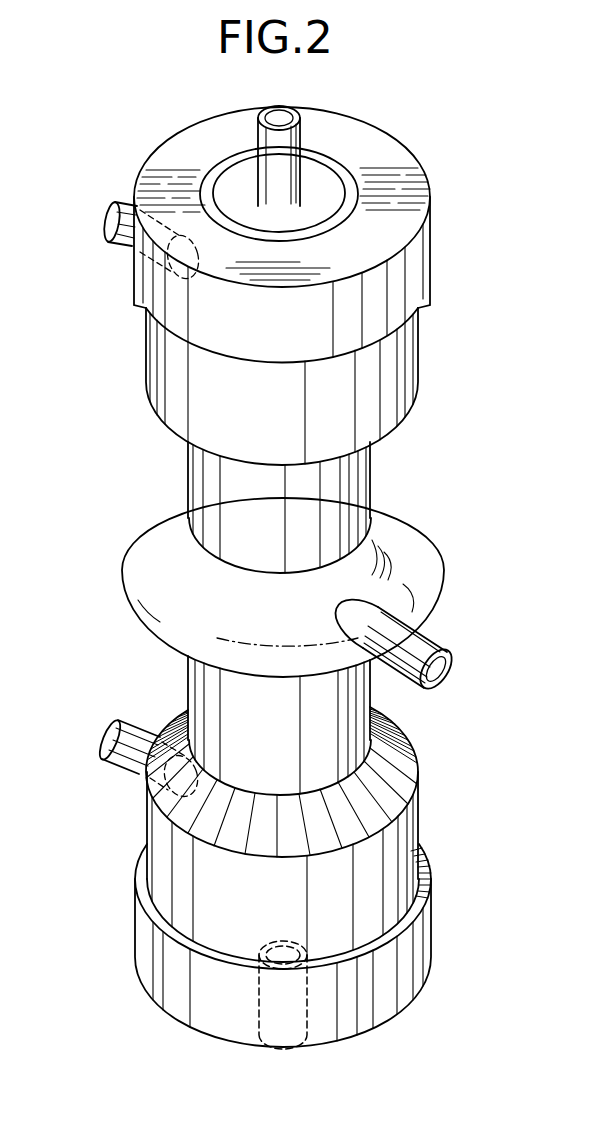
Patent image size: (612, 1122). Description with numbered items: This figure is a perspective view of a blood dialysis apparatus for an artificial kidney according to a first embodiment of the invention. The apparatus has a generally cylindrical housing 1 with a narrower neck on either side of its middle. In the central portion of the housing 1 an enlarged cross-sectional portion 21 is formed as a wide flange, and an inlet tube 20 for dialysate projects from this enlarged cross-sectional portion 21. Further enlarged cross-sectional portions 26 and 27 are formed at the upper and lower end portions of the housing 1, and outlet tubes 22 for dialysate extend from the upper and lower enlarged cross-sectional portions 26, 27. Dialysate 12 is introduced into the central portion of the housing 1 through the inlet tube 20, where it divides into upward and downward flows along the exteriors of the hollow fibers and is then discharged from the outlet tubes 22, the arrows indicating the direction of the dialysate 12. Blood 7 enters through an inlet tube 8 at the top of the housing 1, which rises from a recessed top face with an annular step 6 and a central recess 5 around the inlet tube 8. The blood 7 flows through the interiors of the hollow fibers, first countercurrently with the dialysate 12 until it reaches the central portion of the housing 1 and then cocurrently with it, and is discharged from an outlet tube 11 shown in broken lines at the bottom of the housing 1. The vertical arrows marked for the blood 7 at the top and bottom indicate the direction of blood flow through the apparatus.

The housing 1 is at (376, 478).
The recess 5 is at (310, 215).
The annular groove 6 is at (251, 200).
The blood 7 is at (279, 70).
The inlet tube 8 is at (290, 143).
The outlet tube 11 is at (310, 1045).
The dialysate 12 is at (102, 208).
The inlet tube for dialysate 20 is at (412, 643).
The enlarged cross-sectional portion 21 is at (126, 572).
The outlet tubes for dialysate 22 is at (123, 248).
The upper enlarged cross-sectional portion 26 is at (392, 373).
The lower enlarged cross-sectional portion 27 is at (392, 843).